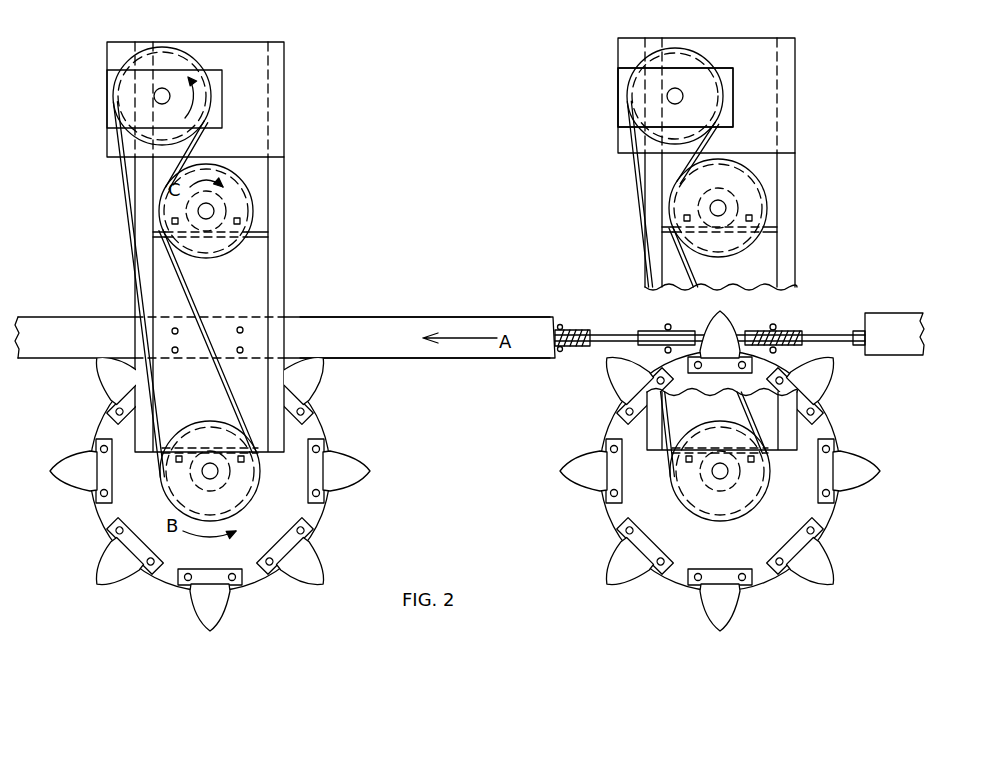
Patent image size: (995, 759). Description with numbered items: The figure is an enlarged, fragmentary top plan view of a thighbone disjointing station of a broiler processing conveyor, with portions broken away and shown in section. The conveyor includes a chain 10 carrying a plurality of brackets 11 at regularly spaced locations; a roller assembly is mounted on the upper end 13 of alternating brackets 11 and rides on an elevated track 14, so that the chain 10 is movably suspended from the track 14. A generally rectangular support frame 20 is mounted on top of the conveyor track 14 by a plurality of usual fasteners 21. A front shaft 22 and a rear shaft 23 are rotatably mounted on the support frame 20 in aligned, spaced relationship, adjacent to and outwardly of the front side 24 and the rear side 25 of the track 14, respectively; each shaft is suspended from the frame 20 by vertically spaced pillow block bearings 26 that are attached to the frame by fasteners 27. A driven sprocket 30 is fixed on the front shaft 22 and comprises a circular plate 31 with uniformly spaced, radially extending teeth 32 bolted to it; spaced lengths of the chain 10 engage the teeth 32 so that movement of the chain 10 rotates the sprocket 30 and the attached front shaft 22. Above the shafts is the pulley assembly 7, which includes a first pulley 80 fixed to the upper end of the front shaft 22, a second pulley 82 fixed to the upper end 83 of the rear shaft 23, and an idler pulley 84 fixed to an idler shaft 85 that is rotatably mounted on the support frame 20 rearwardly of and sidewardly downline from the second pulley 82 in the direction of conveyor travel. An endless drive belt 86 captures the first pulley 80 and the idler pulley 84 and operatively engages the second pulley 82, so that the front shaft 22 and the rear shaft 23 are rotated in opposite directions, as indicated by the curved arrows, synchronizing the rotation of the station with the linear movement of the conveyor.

The pulley assembly 7 is at (606, 107).
The chain 10 is at (840, 332).
The brackets 11 is at (563, 327).
The upper end 13 is at (552, 338).
The elevated track 14 is at (378, 333).
The support frame 20 is at (276, 172).
The fasteners 21 is at (240, 326).
The front shaft 22 is at (218, 474).
The rear shaft 23 is at (206, 222).
The front side 24 is at (470, 358).
The rear side 25 is at (463, 317).
The pillow block bearings 26 is at (166, 486).
The fasteners 27 is at (667, 203).
The driven sprocket 30 is at (97, 513).
The circular plate 31 is at (253, 574).
The teeth 32 is at (73, 472).
The first pulley 80 is at (224, 497).
The second pulley 82 is at (252, 243).
The upper end 83 is at (720, 200).
The idler pulley 84 is at (172, 60).
The idler shaft 85 is at (154, 97).
The endless drive belt 86 is at (126, 192).